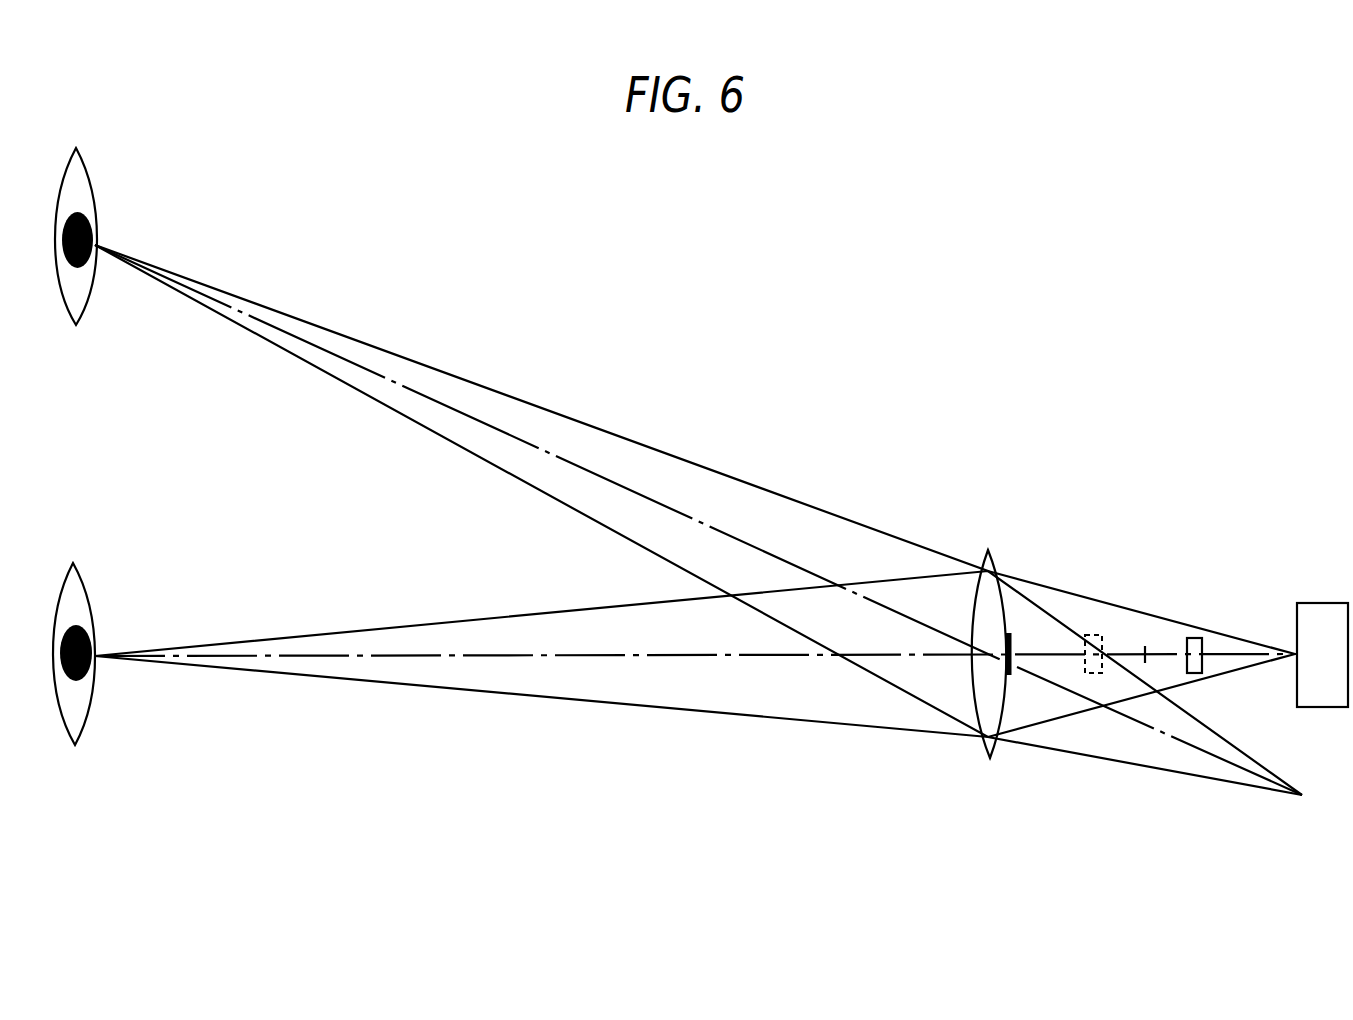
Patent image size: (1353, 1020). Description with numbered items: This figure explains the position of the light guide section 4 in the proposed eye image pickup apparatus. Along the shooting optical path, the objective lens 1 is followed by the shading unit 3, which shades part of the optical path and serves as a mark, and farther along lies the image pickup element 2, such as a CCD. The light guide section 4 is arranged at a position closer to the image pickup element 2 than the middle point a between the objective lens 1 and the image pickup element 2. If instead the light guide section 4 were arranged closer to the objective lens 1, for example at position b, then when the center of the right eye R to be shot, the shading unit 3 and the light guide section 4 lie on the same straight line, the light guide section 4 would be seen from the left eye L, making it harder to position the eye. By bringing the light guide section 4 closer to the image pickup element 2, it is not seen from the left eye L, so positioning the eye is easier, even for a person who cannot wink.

The left eye L is at (92, 188).
The right eye R is at (90, 595).
The objective lens 1 is at (983, 688).
The image pickup element 2 is at (1322, 603).
The shading unit 3 is at (1013, 668).
The light guide section 4 is at (1196, 637).
The middle point a is at (1148, 656).
The position b is at (1099, 674).